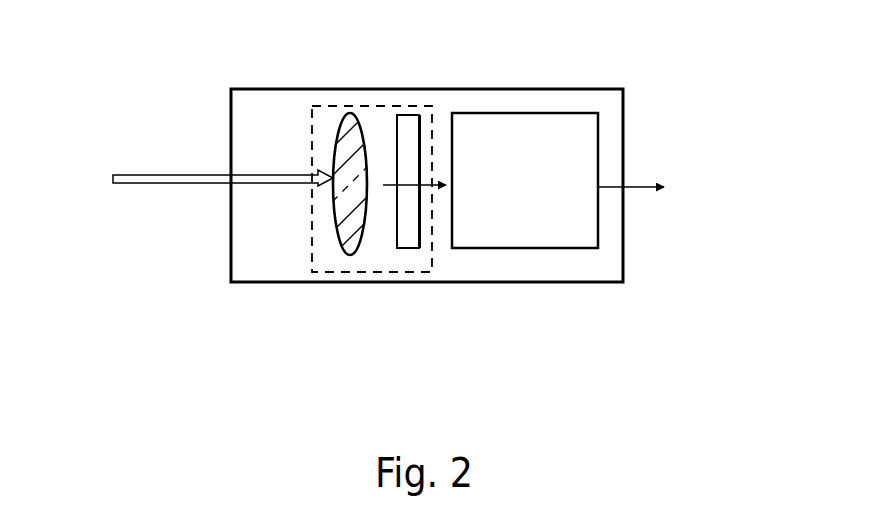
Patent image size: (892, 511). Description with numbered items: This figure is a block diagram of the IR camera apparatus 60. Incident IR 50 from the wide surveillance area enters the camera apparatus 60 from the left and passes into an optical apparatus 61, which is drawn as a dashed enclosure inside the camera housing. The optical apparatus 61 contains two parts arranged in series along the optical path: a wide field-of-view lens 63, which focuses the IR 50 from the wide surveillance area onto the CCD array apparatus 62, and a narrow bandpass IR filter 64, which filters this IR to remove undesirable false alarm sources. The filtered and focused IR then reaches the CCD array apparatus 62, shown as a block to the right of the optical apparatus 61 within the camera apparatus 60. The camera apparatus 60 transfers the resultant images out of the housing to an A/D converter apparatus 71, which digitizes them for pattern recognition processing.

The IR 50 is at (132, 198).
The IR camera apparatus 60 is at (626, 147).
The optical apparatus 61 is at (307, 126).
The CCD array apparatus 62 is at (502, 113).
The wide field-of-view lens 63 is at (348, 256).
The narrow bandpass IR filter 64 is at (505, 249).
The A/D converter apparatus 71 is at (692, 193).